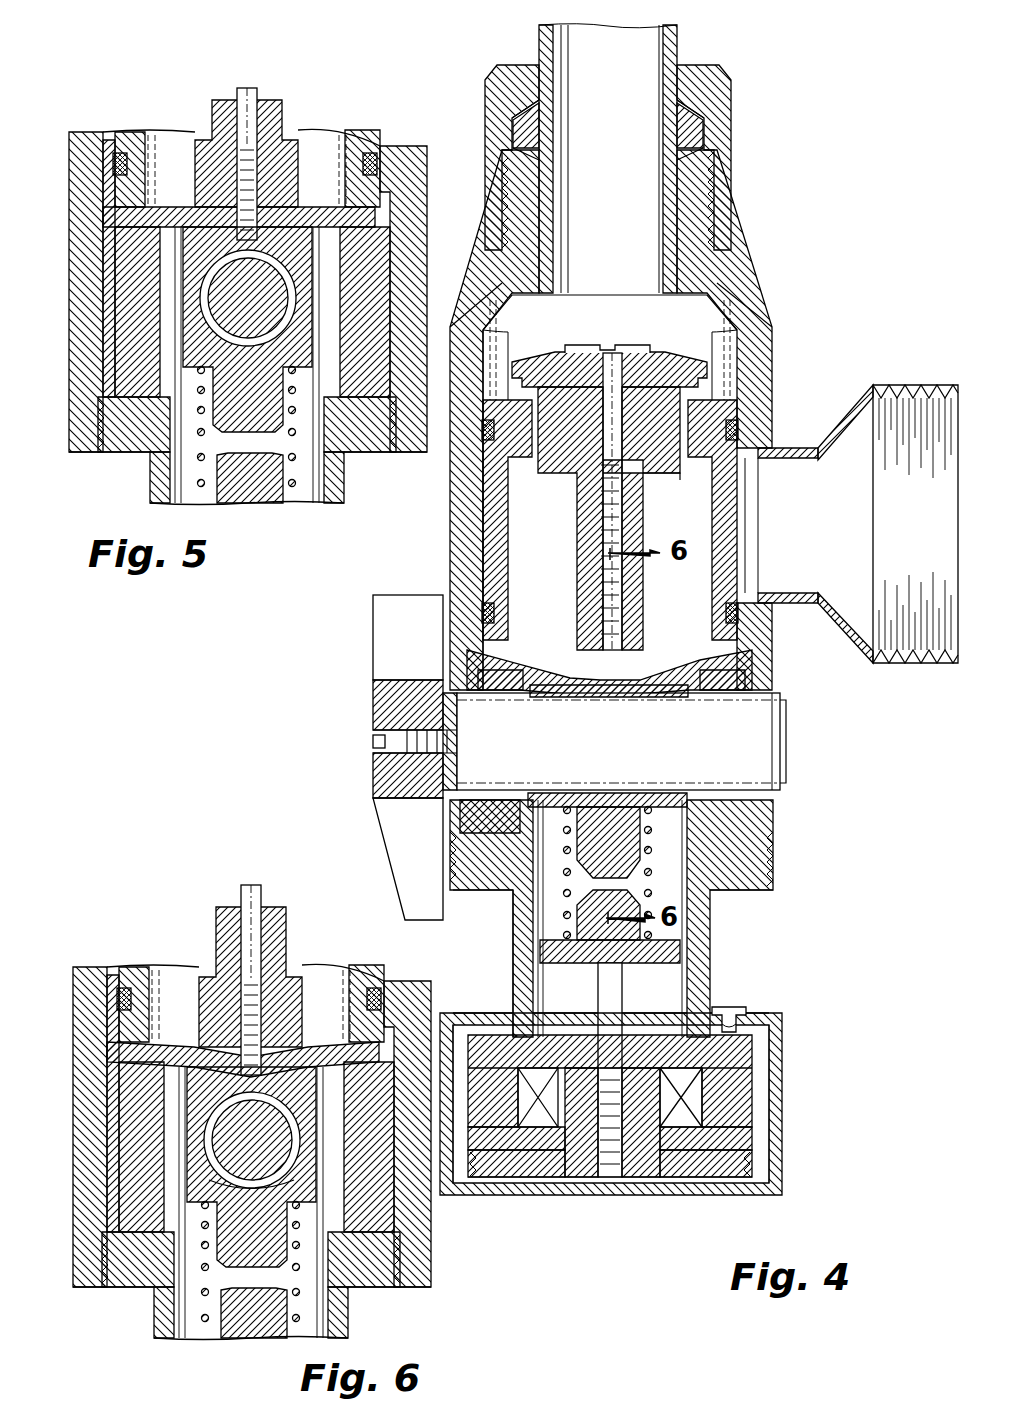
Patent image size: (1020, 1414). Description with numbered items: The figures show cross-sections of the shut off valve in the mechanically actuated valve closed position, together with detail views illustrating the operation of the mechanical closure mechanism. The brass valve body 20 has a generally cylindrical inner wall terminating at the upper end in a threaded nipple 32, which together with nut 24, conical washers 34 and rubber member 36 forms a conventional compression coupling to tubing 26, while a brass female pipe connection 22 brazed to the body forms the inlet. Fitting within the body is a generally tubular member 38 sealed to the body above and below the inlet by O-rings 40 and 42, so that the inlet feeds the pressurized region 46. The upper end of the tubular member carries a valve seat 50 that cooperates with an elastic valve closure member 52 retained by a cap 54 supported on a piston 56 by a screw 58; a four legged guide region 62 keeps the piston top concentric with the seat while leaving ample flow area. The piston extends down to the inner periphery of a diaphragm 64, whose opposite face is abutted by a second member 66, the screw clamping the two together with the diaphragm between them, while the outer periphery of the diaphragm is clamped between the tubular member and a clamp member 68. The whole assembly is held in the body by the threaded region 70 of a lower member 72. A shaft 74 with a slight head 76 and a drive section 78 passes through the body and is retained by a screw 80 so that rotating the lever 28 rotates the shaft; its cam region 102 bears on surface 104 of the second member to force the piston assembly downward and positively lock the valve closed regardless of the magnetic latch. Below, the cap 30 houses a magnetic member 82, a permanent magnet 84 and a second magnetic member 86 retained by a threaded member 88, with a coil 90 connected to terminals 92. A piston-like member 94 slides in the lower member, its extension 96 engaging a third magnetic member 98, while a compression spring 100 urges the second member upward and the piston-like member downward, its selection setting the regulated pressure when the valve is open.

In FIG. 5, the valve body 20 is at (415, 290).
In FIG. 6, the valve body 20 is at (252, 1099).
In FIG. 4, the valve body 20 is at (772, 385).
In FIG. 4, the female pipe connection 22 is at (925, 385).
In FIG. 4, the nut 24 is at (733, 170).
In FIG. 4, the tubing 26 is at (539, 45).
In FIG. 4, the lever 28 is at (400, 880).
In FIG. 4, the cap 30 is at (555, 1195).
In FIG. 4, the threaded nipple 32 is at (730, 252).
In FIG. 4, the conical washers 34 is at (700, 110).
In FIG. 4, the rubber member 36 is at (690, 120).
In FIG. 4, the tubular member 38 is at (460, 550).
In FIG. 4, the O-ring 40 is at (483, 445).
In FIG. 5, the O-ring 42 is at (118, 150).
In FIG. 6, the O-ring 42 is at (246, 944).
In FIG. 4, the O-ring 42 is at (483, 612).
In FIG. 4, the region 46 is at (705, 518).
In FIG. 4, the valve seat 50 is at (740, 375).
In FIG. 4, the valve closure member 52 is at (575, 352).
In FIG. 4, the cap 54 is at (520, 362).
In FIG. 5, the piston 56 is at (212, 112).
In FIG. 6, the piston 56 is at (239, 956).
In FIG. 4, the piston 56 is at (577, 510).
In FIG. 5, the screw 58 is at (257, 95).
In FIG. 6, the screw 58 is at (276, 960).
In FIG. 4, the screw 58 is at (640, 345).
In FIG. 4, the guide region 62 is at (660, 460).
In FIG. 5, the diaphragm 64 is at (175, 205).
In FIG. 6, the diaphragm 64 is at (243, 1001).
In FIG. 4, the diaphragm 64 is at (540, 650).
In FIG. 5, the second member 66 is at (262, 398).
In FIG. 6, the second member 66 is at (251, 1167).
In FIG. 4, the second member 66 is at (655, 820).
In FIG. 4, the clamp member 68 is at (500, 688).
In FIG. 5, the threaded region 70 is at (125, 440).
In FIG. 6, the threaded region 70 is at (240, 1272).
In FIG. 4, the threaded region 70 is at (500, 882).
In FIG. 5, the lower member 72 is at (152, 490).
In FIG. 6, the lower member 72 is at (219, 1314).
In FIG. 4, the lower member 72 is at (513, 975).
In FIG. 4, the shaft 74 is at (770, 745).
In FIG. 4, the head 76 is at (786, 760).
In FIG. 4, the drive section 78 is at (405, 765).
In FIG. 4, the screw 80 is at (373, 742).
In FIG. 4, the magnetic member 82 is at (760, 1060).
In FIG. 4, the permanent magnet 84 is at (752, 1135).
In FIG. 4, the second magnetic member 86 is at (752, 1160).
In FIG. 4, the threaded member 88 is at (505, 1185).
In FIG. 4, the coil 90 is at (518, 1088).
In FIG. 4, the terminals 92 is at (745, 1016).
In FIG. 5, the piston-like member 94 is at (262, 490).
In FIG. 6, the piston-like member 94 is at (248, 1328).
In FIG. 4, the piston-like member 94 is at (645, 963).
In FIG. 4, the extension 96 is at (598, 1000).
In FIG. 4, the third magnetic member 98 is at (580, 1180).
In FIG. 5, the spring 100 is at (298, 478).
In FIG. 6, the spring 100 is at (306, 1262).
In FIG. 4, the spring 100 is at (655, 860).
In FIG. 5, the cam region 102 is at (248, 298).
In FIG. 6, the cam region 102 is at (252, 1140).
In FIG. 4, the cam region 102 is at (595, 745).
In FIG. 6, the cam surface 104 is at (206, 1180).
In FIG. 4, the cam surface 104 is at (600, 792).